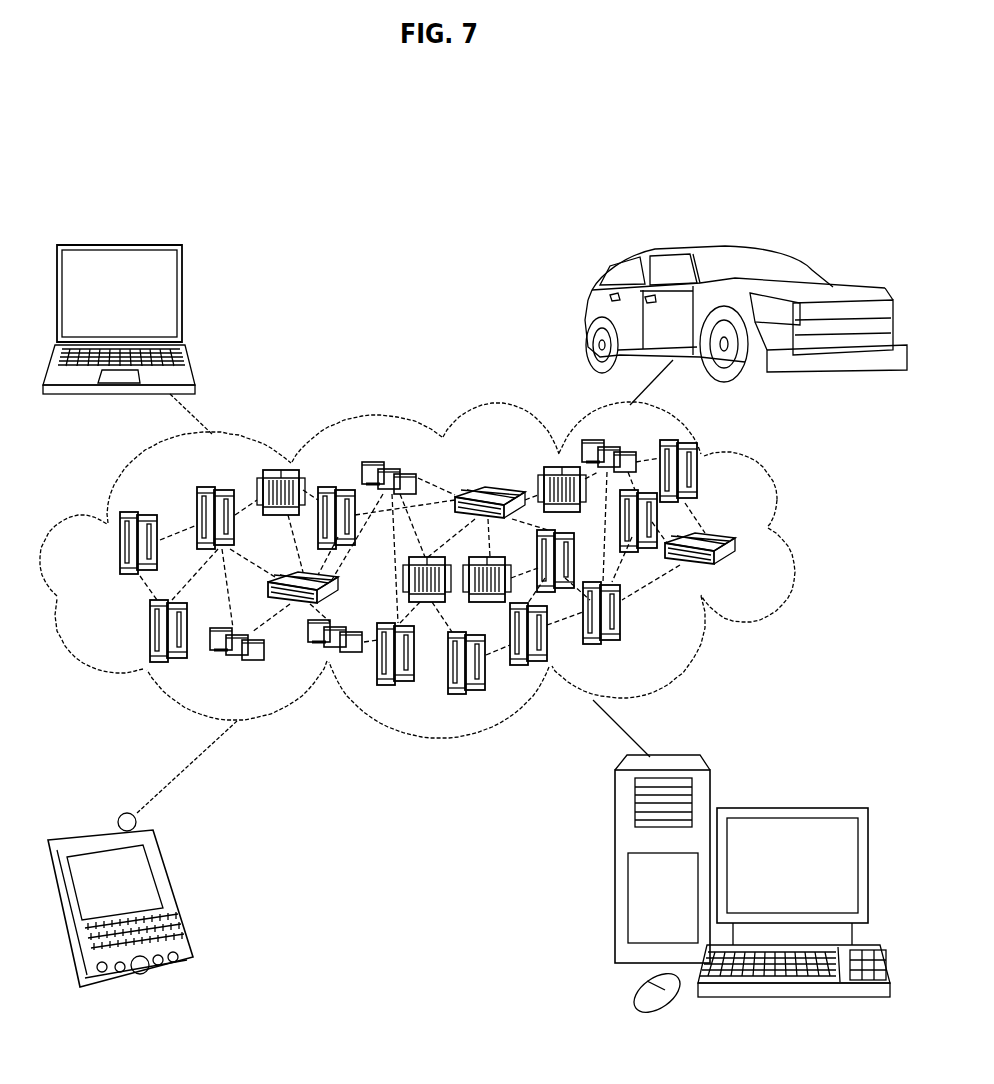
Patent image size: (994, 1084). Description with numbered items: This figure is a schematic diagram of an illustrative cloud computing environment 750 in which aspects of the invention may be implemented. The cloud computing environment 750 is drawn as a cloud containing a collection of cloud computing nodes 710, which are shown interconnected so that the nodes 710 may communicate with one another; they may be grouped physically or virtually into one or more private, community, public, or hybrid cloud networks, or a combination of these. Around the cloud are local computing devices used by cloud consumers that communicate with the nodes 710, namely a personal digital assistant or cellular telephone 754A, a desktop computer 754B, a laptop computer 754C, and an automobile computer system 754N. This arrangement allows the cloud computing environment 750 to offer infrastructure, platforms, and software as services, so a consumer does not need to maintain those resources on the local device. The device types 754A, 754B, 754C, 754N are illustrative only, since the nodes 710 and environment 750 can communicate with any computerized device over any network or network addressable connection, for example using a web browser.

The cloud computing environment 750 is at (788, 548).
The cloud computing nodes 710 is at (737, 574).
The personal digital assistant or cellular telephone 754A is at (172, 893).
The desktop computer 754B is at (790, 806).
The laptop computer 754C is at (183, 302).
The automobile computer system 754N is at (583, 315).